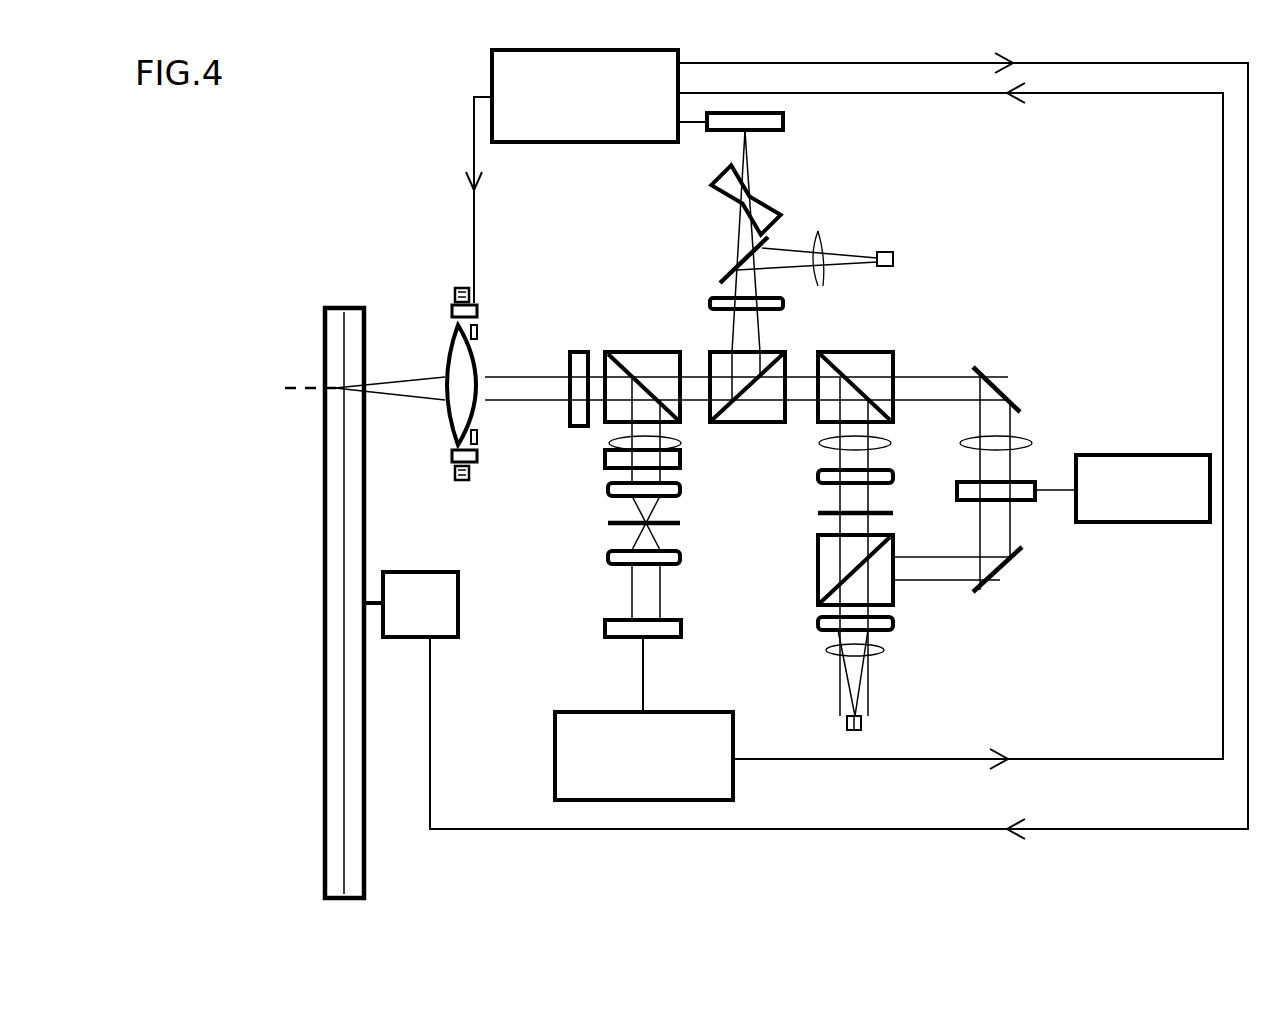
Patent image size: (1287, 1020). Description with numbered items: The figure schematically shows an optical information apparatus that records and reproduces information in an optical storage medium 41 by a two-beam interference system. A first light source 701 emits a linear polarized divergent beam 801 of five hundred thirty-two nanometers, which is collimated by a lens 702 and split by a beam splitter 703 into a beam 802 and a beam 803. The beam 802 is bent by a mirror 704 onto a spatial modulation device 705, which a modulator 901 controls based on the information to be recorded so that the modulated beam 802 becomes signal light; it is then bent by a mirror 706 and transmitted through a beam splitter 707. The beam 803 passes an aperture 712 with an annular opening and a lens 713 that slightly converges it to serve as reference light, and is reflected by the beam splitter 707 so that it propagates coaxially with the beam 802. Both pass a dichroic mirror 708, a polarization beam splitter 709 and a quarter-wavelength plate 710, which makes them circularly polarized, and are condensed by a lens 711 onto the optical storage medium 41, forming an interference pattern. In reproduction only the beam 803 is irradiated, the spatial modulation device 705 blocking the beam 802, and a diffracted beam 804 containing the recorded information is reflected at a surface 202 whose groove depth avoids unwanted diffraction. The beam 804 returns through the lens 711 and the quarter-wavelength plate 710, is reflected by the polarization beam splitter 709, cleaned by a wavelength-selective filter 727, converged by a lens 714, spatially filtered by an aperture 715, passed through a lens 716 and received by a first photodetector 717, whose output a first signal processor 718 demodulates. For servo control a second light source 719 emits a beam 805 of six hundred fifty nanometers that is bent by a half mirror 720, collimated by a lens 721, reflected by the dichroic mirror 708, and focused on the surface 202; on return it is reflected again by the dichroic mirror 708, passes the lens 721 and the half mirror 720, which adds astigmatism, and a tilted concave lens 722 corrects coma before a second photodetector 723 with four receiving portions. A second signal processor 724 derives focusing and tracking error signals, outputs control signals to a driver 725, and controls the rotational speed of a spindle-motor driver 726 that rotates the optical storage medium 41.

The optical storage medium 41 is at (366, 865).
The surface 202 is at (345, 880).
The first light source 701 is at (863, 723).
The lens 702 is at (895, 628).
The beam splitter 703 is at (815, 580).
The mirror 704 is at (1005, 585).
The spatial modulation device 705 is at (1025, 502).
The mirror 706 is at (1000, 370).
The beam splitter 707 is at (895, 358).
The dichroic mirror 708 is at (708, 352).
The polarization beam splitter 709 is at (622, 352).
The quarter-wavelength plate 710 is at (568, 355).
The lens 711 is at (447, 340).
The aperture 712 is at (815, 513).
The lens 713 is at (815, 475).
The lens 714 is at (604, 490).
The aperture 715 is at (604, 522).
The lens 716 is at (604, 556).
The first photodetector 717 is at (603, 628).
The first signal processor 718 is at (680, 712).
The second light source 719 is at (895, 260).
The half mirror 720 is at (720, 275).
The lens 721 is at (785, 305).
The concave lens 722 is at (770, 205).
The second photodetector 723 is at (784, 118).
The second signal processor 724 is at (576, 143).
The driver 725 is at (478, 308).
The driver 726 is at (443, 545).
The filter 727 is at (602, 462).
The beam 801 is at (880, 655).
The beam 802 is at (1025, 440).
The beam 803 is at (830, 445).
The beam 804 is at (609, 443).
The beam 805 is at (822, 285).
The modulator 901 is at (1142, 523).